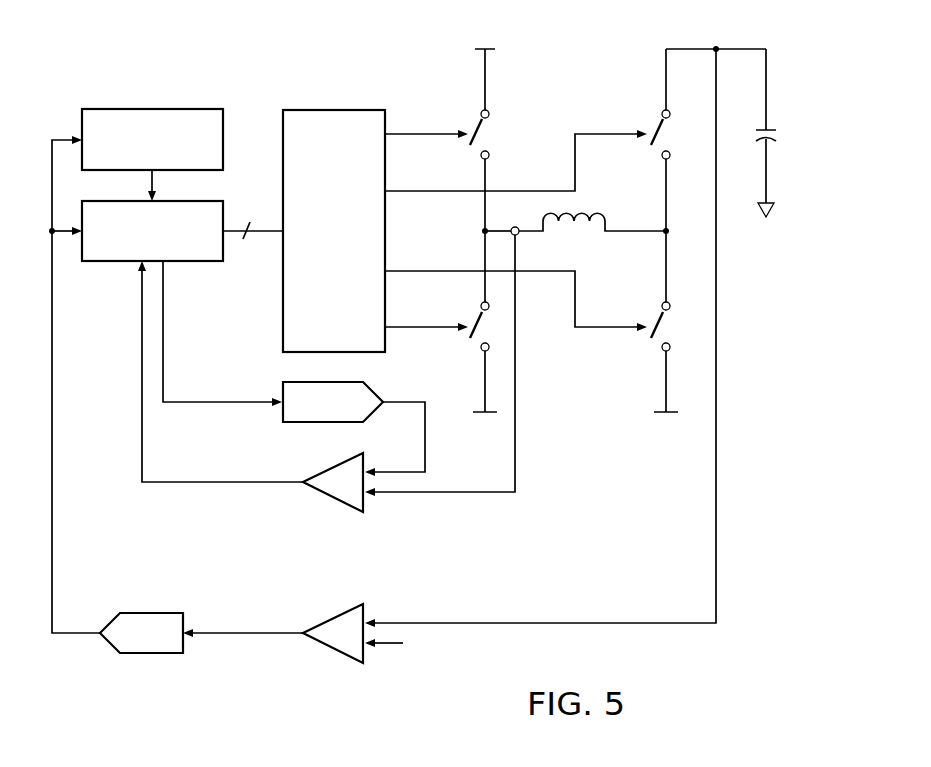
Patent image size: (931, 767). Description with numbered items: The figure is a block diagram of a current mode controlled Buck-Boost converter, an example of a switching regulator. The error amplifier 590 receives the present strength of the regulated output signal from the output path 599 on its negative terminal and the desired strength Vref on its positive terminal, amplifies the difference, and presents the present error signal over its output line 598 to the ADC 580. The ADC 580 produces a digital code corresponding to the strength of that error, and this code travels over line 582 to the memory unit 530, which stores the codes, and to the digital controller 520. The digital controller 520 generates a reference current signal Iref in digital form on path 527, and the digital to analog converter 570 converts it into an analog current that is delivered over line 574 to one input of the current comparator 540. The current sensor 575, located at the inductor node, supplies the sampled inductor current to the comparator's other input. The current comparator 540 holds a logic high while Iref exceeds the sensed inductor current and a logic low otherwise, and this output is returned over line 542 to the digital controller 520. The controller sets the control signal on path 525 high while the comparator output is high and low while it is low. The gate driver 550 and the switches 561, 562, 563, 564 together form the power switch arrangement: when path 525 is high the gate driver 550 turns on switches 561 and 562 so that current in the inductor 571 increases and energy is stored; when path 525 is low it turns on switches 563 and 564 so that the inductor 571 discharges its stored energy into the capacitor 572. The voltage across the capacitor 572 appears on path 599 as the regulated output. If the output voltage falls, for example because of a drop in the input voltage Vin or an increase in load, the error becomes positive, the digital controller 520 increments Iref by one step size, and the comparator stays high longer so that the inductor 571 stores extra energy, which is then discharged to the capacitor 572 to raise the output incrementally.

The digital controller 520 is at (125, 262).
The path 525 is at (266, 226).
The path 527 is at (222, 400).
The memory unit 530 is at (140, 108).
The current comparator 540 is at (332, 500).
The comparator output line 542 is at (182, 484).
The gate driver 550 is at (352, 281).
The switch 561 is at (476, 124).
The switch 562 is at (657, 316).
The switch 563 is at (476, 316).
The switch 564 is at (657, 124).
The digital to analog converter 570 is at (282, 420).
The inductor 571 is at (603, 210).
The capacitor 572 is at (782, 136).
The DAC output line 574 is at (407, 400).
The current sensor 575 is at (518, 235).
The ADC 580 is at (140, 655).
The ADC output line 582 is at (73, 637).
The error amplifier 590 is at (327, 652).
The error amplifier output line 598 is at (277, 631).
The path 599 is at (737, 47).